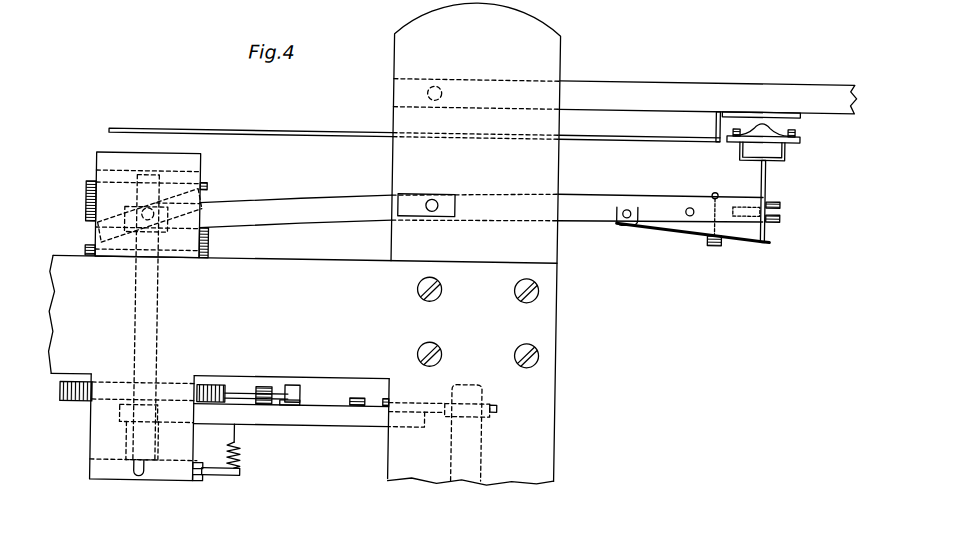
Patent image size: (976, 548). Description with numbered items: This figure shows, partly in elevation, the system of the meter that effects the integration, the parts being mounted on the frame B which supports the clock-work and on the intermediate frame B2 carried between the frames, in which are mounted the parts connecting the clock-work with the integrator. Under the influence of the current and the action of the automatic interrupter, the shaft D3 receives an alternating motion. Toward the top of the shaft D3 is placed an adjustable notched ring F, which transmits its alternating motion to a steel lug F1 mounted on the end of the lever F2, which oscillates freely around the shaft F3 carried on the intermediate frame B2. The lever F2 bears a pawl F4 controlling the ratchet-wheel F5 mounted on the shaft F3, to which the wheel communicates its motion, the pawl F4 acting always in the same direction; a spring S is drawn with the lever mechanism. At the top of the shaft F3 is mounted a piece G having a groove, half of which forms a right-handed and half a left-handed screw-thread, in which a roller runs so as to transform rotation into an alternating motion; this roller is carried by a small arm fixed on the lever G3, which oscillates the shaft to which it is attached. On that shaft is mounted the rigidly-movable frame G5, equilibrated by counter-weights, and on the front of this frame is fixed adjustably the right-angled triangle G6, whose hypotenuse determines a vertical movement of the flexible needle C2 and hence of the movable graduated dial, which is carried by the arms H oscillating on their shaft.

The frame B is at (475, 244).
The intermediate frame B2 is at (302, 370).
The arms H is at (707, 100).
The flexible needle C2 is at (291, 134).
The grooved piece G is at (85, 211).
The lever G3 is at (294, 201).
The rigidly-movable frame G5 is at (639, 193).
The right-angled triangle G6 is at (764, 190).
The adjustable ring F is at (486, 405).
The steel lug F1 is at (357, 401).
The lever F2 is at (320, 424).
The shaft F3 is at (155, 349).
The pawl F4 is at (236, 394).
The ratchet-wheel F5 is at (68, 407).
The spring S is at (241, 456).
The shaft D3 is at (484, 450).